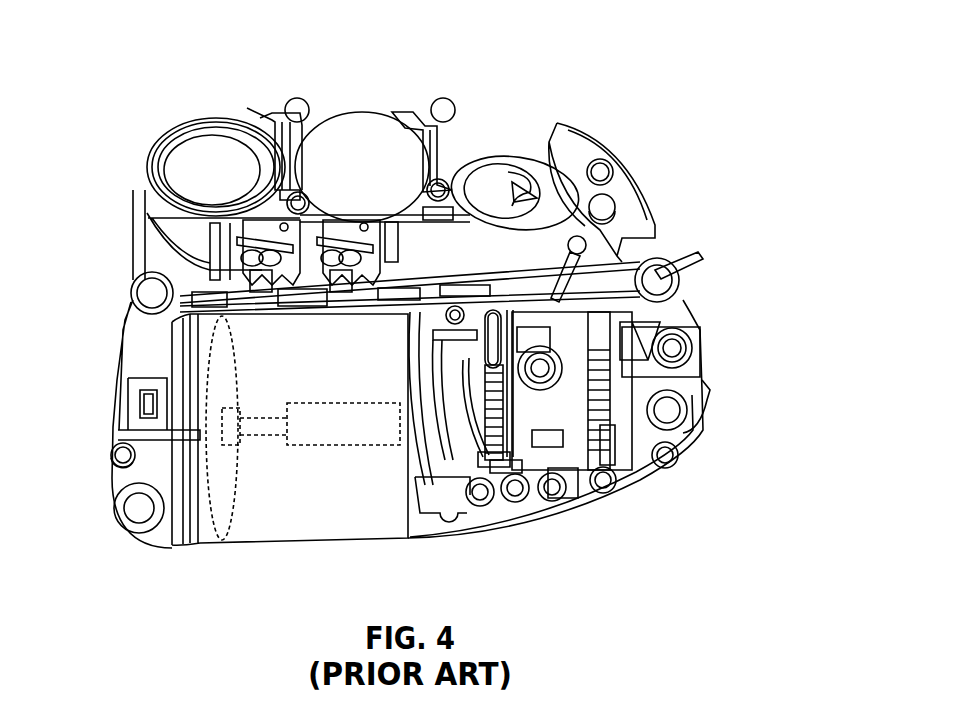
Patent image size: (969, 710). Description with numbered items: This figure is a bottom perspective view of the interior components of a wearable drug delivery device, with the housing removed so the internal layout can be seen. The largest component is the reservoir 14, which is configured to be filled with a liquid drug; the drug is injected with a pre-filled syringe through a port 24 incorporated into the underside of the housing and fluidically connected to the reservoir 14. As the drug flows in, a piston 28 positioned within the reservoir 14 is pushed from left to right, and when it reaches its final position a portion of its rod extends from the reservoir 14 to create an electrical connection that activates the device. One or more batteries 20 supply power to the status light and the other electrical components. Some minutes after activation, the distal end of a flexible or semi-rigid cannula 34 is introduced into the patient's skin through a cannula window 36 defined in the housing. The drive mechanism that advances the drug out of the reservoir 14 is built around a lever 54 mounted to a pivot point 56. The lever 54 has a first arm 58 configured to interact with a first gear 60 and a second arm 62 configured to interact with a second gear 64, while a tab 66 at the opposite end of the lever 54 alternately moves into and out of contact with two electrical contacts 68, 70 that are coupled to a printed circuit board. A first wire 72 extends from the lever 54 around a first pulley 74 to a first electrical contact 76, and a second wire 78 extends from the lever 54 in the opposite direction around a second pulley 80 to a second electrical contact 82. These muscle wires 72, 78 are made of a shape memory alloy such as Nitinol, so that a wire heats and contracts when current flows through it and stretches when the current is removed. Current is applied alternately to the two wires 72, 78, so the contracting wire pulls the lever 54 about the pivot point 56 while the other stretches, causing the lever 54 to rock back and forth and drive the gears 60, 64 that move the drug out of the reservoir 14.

The reservoir 14 is at (347, 510).
The batteries 20 is at (345, 132).
The port 24 is at (118, 513).
The piston 28 is at (225, 490).
The cannula 34 is at (685, 248).
The cannula window 36 is at (637, 230).
The lever 54 is at (550, 410).
The pivot point 56 is at (540, 368).
The first arm 58 is at (479, 313).
The first gear 60 is at (493, 417).
The second arm 62 is at (587, 342).
The second gear 64 is at (607, 432).
The tab 66 is at (575, 482).
The electrical contact 68 is at (612, 485).
The electrical contact 70 is at (548, 485).
The first wire 72 is at (183, 282).
The first pulley 74 is at (143, 296).
The first electrical contact 76 is at (270, 257).
The second wire 78 is at (600, 265).
The second pulley 80 is at (662, 282).
The second electrical contact 82 is at (350, 257).